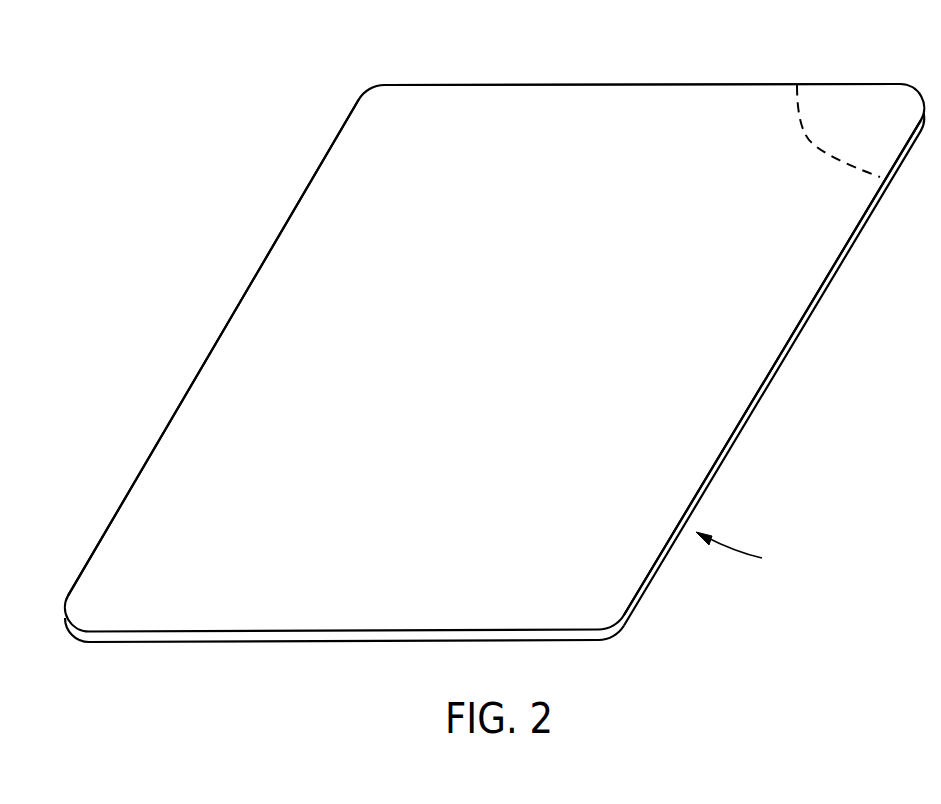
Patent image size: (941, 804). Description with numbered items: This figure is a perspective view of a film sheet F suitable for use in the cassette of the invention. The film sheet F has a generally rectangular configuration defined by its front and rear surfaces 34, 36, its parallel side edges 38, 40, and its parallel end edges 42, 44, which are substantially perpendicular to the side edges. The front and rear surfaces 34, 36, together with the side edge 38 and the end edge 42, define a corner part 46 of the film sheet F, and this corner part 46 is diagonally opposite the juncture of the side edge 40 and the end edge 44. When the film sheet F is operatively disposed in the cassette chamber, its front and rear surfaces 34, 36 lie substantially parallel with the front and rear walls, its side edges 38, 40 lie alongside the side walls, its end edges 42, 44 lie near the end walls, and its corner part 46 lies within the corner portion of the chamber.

The front surface 34 is at (797, 338).
The rear surface 36 is at (675, 249).
The side edge 38 is at (743, 432).
The side edge 40 is at (216, 345).
The end edge 42 is at (604, 84).
The end edge 44 is at (232, 636).
The corner part 46 is at (865, 138).
The film sheet F is at (738, 549).